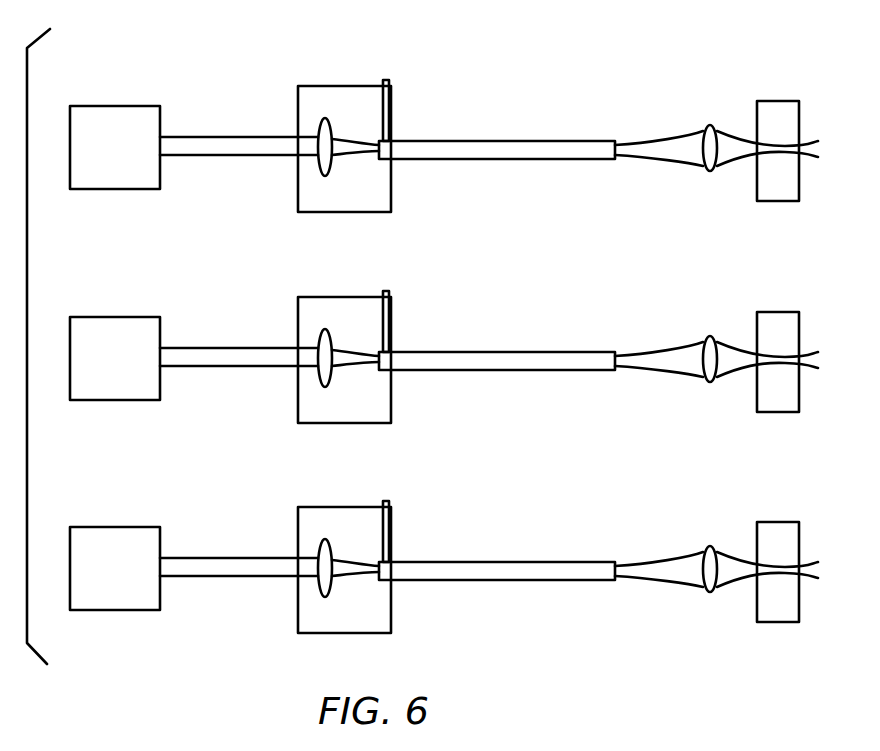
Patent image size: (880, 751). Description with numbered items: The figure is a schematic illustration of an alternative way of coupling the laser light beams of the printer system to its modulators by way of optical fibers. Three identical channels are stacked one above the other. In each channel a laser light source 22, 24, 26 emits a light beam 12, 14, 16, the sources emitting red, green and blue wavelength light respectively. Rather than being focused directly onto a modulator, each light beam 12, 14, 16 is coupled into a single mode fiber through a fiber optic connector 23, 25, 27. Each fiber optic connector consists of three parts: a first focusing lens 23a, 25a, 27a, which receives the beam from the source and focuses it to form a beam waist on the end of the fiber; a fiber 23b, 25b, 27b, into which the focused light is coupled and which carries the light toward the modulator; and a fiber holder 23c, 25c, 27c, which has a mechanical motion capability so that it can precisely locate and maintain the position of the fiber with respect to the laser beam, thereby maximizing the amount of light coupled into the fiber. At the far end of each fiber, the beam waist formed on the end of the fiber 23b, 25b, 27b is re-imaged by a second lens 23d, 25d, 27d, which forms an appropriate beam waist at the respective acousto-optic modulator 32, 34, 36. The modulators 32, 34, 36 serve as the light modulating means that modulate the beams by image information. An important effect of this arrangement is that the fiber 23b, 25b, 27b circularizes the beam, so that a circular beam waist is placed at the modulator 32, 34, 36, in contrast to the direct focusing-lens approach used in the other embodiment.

The light source 22 is at (128, 105).
The light beam 12 is at (238, 135).
The fiber optic connector 23 is at (345, 86).
The first focusing lens 23a is at (318, 168).
The fiber 23b is at (478, 140).
The fiber holder 23c is at (390, 105).
The second lens 23d is at (710, 125).
The accusto-optic modulator 32 is at (780, 100).
The light source 24 is at (115, 336).
The light beam 14 is at (239, 331).
The fiber optic connector 25 is at (344, 335).
The first focusing lens 25a is at (299, 380).
The fiber 25b is at (497, 334).
The fiber holder 25c is at (418, 317).
The second lens 25d is at (716, 330).
The accusto-optic modulator 34 is at (785, 336).
The light source 26 is at (123, 543).
The light beam 16 is at (239, 538).
The fiber optic connector 27 is at (344, 545).
The first focusing lens 27a is at (305, 595).
The fiber 27b is at (497, 549).
The fiber holder 27c is at (420, 531).
The second lens 27d is at (716, 535).
The accusto-optic modulator 36 is at (791, 550).